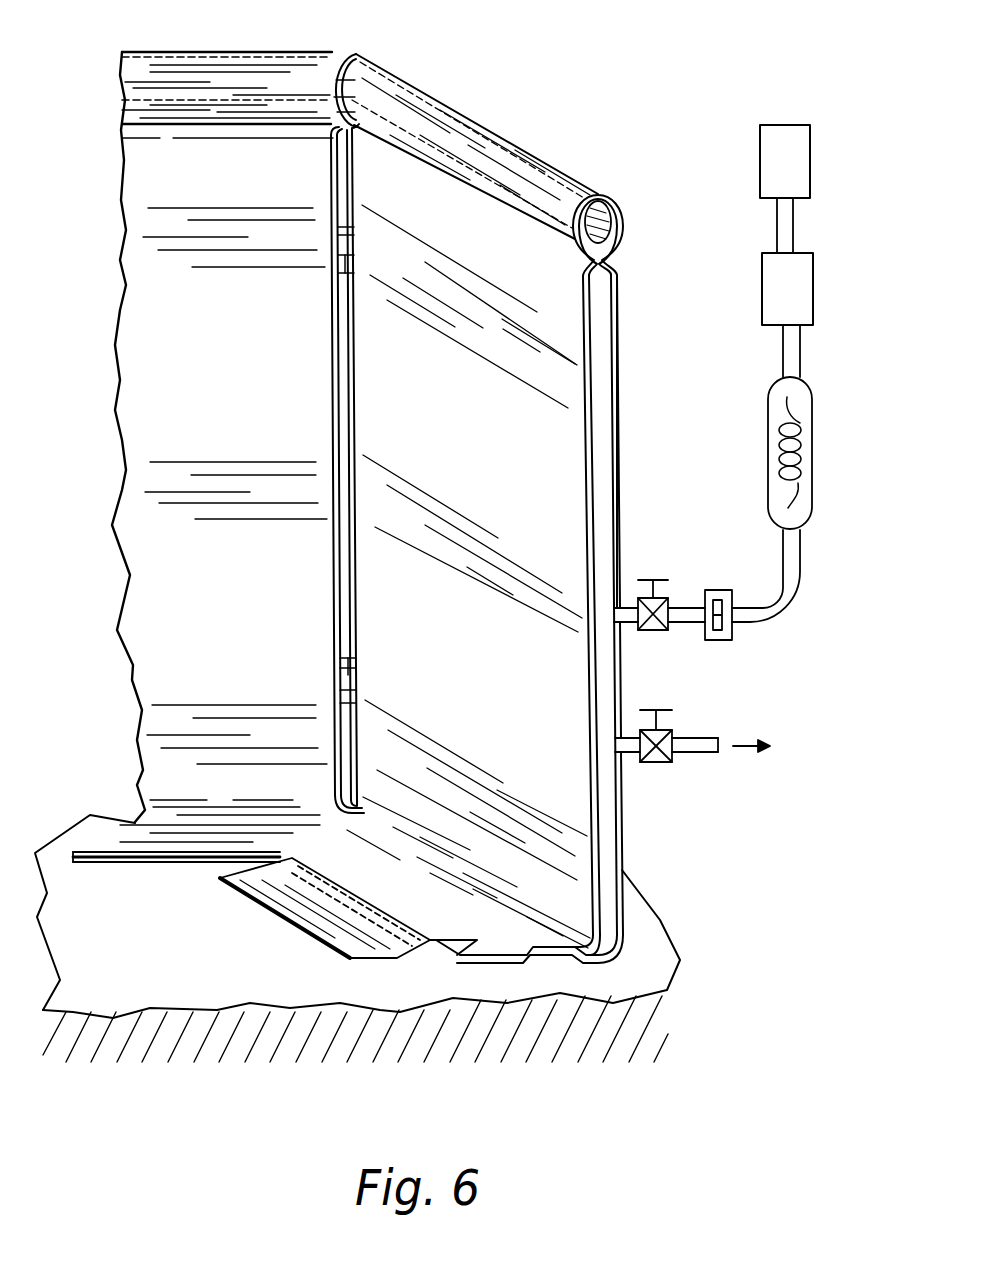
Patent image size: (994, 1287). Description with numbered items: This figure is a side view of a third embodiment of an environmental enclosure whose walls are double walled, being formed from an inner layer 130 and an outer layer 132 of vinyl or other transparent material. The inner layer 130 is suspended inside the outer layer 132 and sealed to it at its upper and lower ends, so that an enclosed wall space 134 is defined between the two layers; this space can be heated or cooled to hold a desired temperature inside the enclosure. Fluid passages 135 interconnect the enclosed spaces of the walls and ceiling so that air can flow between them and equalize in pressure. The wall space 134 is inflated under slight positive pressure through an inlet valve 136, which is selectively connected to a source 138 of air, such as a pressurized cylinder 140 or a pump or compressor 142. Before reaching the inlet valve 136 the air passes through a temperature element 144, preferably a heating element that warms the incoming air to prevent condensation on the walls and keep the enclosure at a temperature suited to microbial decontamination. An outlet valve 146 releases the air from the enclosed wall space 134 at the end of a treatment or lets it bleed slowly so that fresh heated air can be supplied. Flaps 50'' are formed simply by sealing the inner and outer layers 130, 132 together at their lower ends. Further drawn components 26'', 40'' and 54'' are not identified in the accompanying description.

The source of air 138 is at (761, 104).
The pressurized cylinder 140 is at (761, 172).
The pump or compressor 142 is at (762, 283).
The temperature element 144 is at (768, 452).
The flexible panel 26'' is at (536, 576).
The rolled panel portion 40'' is at (467, 146).
The fluid passages 135 is at (345, 263).
The inner layer 130 is at (587, 492).
The outer layer 132 is at (619, 422).
The enclosed wall space 134 is at (608, 820).
The inlet valve 136 is at (688, 661).
The outlet valve 146 is at (694, 772).
The flaps 50'' is at (340, 977).
The ramp plate 54'' is at (315, 919).